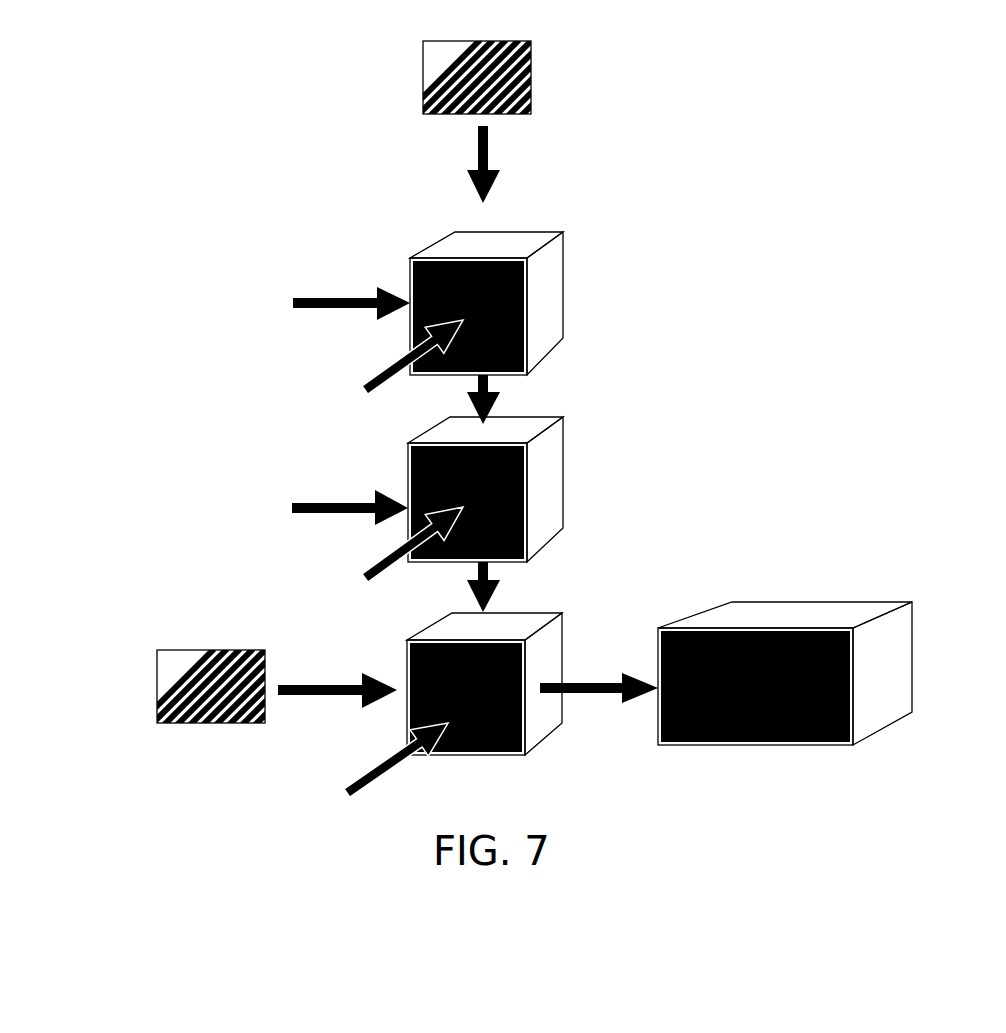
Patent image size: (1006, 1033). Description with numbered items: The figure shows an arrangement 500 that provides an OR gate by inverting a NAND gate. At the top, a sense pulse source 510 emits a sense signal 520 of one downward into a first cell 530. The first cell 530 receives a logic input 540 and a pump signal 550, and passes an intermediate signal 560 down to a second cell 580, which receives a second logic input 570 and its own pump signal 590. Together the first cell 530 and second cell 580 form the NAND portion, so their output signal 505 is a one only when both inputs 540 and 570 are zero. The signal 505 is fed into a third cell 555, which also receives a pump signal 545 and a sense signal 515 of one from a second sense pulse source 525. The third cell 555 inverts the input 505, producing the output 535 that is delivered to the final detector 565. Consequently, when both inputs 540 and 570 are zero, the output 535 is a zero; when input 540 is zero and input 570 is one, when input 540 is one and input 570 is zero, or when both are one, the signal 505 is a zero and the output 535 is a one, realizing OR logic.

The OR gate arrangement 500 is at (742, 89).
The sense pulse source 510 is at (525, 62).
The sense signal 520 is at (478, 151).
The first cell 530 is at (542, 275).
The input 540 is at (317, 300).
The pump signal 550 is at (378, 378).
The intermediate signal 560 is at (520, 385).
The input 570 is at (313, 503).
The second cell 580 is at (540, 493).
The pump signal 590 is at (375, 568).
The NAND output signal 505 is at (530, 573).
The sense signal 515 is at (325, 687).
The sense pulse source 525 is at (193, 698).
The pump signal 545 is at (372, 772).
The third cell 555 is at (517, 748).
The output 535 is at (600, 683).
The final detector 565 is at (878, 667).